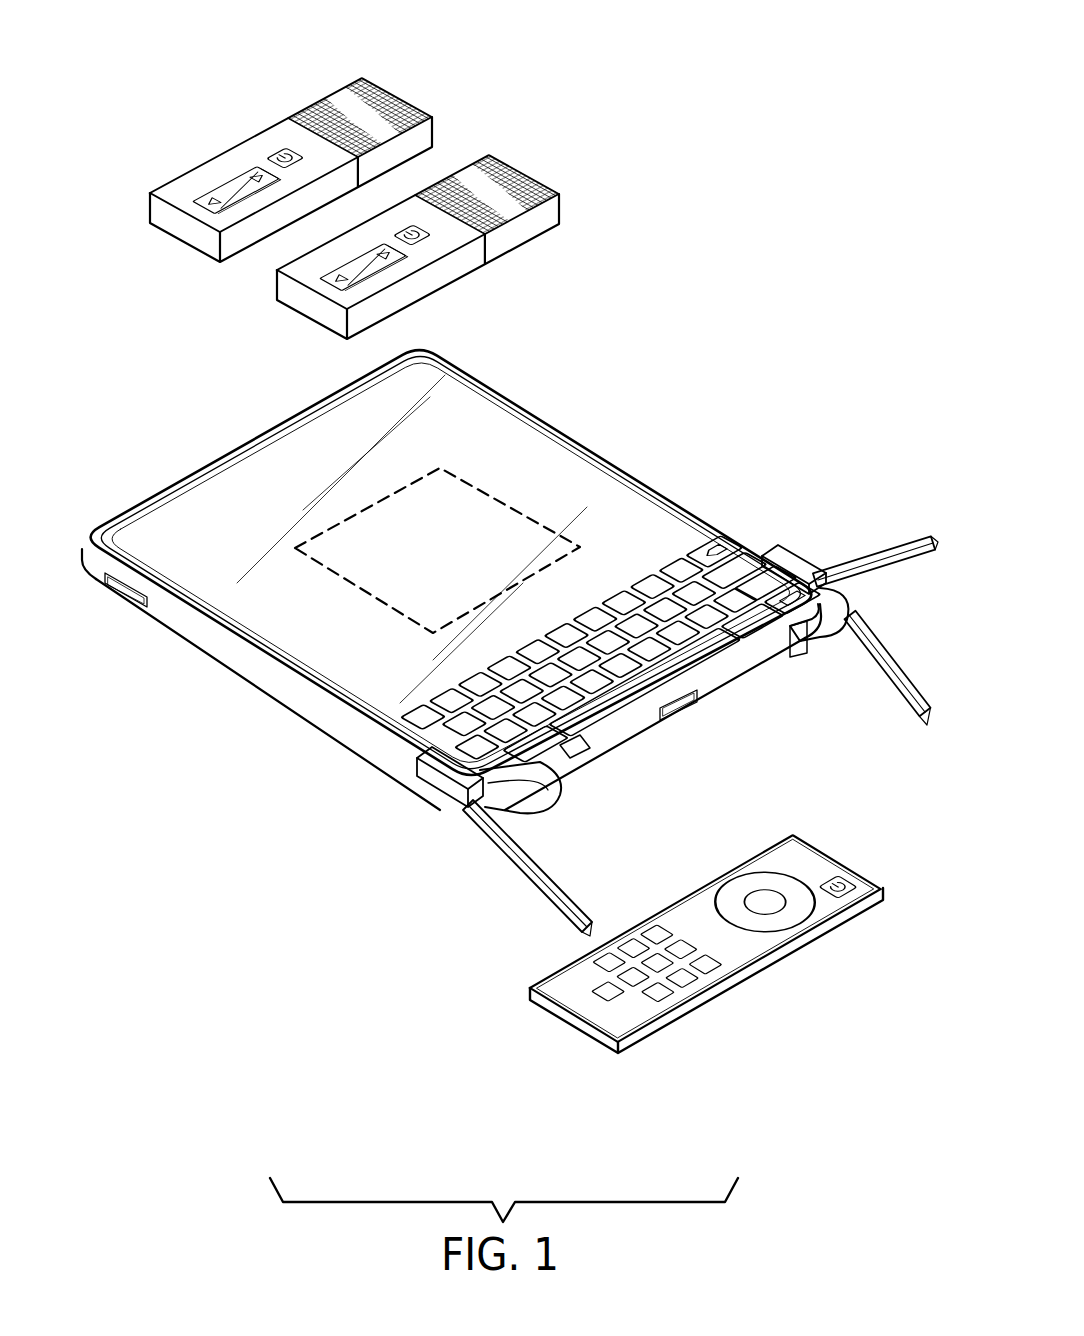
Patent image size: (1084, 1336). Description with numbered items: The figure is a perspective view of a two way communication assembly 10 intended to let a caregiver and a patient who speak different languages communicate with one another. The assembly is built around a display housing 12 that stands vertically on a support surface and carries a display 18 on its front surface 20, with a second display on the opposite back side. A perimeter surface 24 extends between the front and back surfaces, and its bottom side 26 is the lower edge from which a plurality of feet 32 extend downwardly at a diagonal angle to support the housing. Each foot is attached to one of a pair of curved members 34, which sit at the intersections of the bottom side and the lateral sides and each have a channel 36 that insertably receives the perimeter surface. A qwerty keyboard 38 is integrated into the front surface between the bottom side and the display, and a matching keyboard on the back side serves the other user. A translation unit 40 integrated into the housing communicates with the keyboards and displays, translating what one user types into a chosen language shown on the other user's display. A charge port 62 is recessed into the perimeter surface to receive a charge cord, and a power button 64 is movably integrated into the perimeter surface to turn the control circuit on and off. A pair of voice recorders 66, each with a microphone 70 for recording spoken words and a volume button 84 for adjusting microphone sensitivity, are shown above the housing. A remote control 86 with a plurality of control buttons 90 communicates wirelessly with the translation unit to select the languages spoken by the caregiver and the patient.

The two way communication assembly 10 is at (497, 562).
The display housing 12 is at (82, 550).
The displays 18 is at (527, 470).
The front surface 20 is at (284, 430).
The perimeter surface 24 is at (236, 651).
The bottom side 26 is at (743, 670).
The feet 32 is at (904, 548).
The curved members 34 is at (793, 560).
The channel 36 is at (793, 650).
The qwerty keyboards 38 is at (716, 568).
The translation unit 40 is at (308, 540).
The charge port 62 is at (673, 713).
The power button 64 is at (122, 587).
The voice recorders 66 is at (252, 120).
The microphones 70 is at (398, 90).
The volume buttons 84 is at (237, 187).
The remote control 86 is at (744, 942).
The control buttons 90 is at (643, 993).